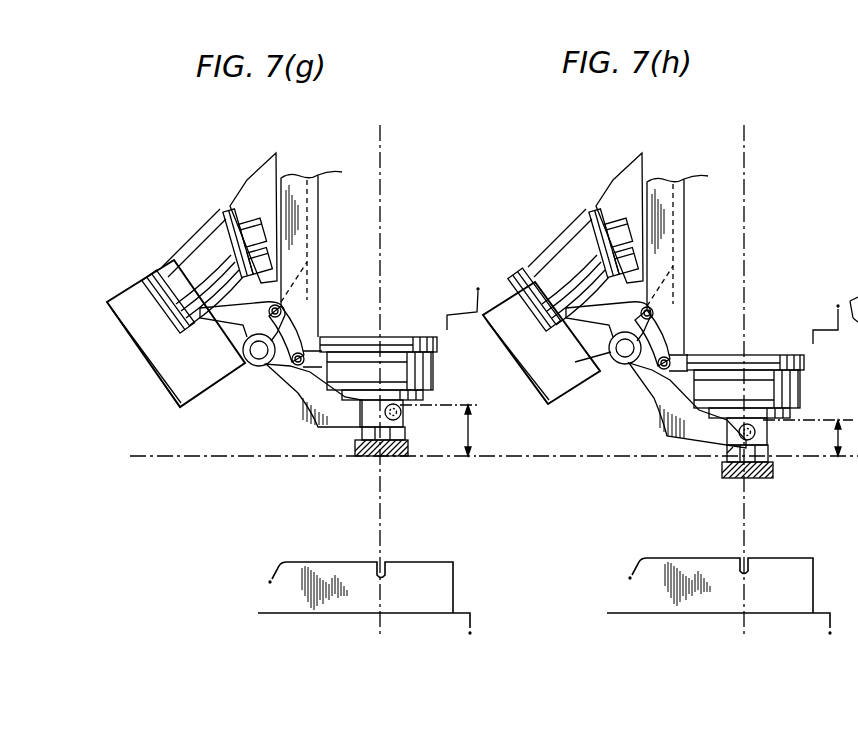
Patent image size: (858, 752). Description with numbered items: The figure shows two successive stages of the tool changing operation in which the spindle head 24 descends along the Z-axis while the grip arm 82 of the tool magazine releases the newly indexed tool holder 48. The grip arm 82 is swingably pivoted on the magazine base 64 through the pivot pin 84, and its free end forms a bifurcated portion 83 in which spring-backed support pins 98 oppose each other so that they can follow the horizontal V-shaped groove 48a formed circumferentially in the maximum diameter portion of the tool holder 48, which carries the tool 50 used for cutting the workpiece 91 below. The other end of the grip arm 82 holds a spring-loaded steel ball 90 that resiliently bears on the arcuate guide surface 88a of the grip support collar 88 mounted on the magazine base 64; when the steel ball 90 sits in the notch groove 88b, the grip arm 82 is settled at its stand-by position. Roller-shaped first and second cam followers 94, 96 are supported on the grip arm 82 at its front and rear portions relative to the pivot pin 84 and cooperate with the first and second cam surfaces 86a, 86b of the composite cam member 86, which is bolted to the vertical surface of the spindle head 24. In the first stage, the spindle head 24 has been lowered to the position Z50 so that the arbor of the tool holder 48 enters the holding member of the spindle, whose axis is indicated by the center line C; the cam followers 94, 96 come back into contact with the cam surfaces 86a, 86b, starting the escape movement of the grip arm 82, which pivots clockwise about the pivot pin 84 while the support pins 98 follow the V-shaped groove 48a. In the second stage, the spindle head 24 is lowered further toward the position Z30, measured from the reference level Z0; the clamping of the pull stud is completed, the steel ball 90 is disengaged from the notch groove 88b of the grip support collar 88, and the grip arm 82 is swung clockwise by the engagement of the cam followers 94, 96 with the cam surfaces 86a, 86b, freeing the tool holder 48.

In FIG. 7g, the spindle head 24 is at (444, 328).
In FIG. 7h, the spindle head 24 is at (813, 346).
In FIG. 7g, the tool holder 48 is at (352, 452).
In FIG. 7h, the tool holder 48 is at (724, 478).
In FIG. 7g, the V-shaped groove 48a is at (401, 412).
In FIG. 7h, the V-shaped groove 48a is at (768, 433).
In FIG. 7g, the tool 50 is at (394, 456).
In FIG. 7h, the tool 50 is at (744, 481).
In FIG. 7g, the magazine base 64 is at (183, 401).
In FIG. 7h, the magazine base 64 is at (516, 300).
In FIG. 7g, the grip arm 82 is at (300, 396).
In FIG. 7h, the grip arm 82 is at (655, 423).
In FIG. 7g, the bifurcated portion 83 is at (402, 422).
In FIG. 7h, the bifurcated portion 83 is at (740, 437).
In FIG. 7g, the pivot pin 84 is at (256, 356).
In FIG. 7h, the pivot pin 84 is at (622, 356).
In FIG. 7g, the composite cam member 86 is at (312, 228).
In FIG. 7h, the composite cam member 86 is at (684, 206).
In FIG. 7g, the first cam surface 86a is at (290, 320).
In FIG. 7h, the first cam surface 86a is at (656, 322).
In FIG. 7g, the second cam surface 86b is at (288, 340).
In FIG. 7h, the second cam surface 86b is at (672, 340).
In FIG. 7g, the grip support collar 88 is at (182, 261).
In FIG. 7h, the grip support collar 88 is at (573, 235).
In FIG. 7g, the guide surface 88a is at (190, 263).
In FIG. 7h, the guide surface 88a is at (571, 237).
In FIG. 7h, the notch groove 88b is at (582, 355).
In FIG. 7g, the steel ball 90 is at (163, 285).
In FIG. 7h, the steel ball 90 is at (562, 283).
In FIG. 7g, the workpiece 91 is at (417, 573).
In FIG. 7h, the workpiece 91 is at (777, 566).
In FIG. 7g, the first cam follower 94 is at (328, 366).
In FIG. 7h, the first cam follower 94 is at (685, 352).
In FIG. 7g, the second cam follower 96 is at (281, 306).
In FIG. 7h, the second cam follower 96 is at (652, 308).
In FIG. 7h, the support pins 98 is at (727, 453).
In FIG. 7g, the reference level Z0 is at (287, 462).
In FIG. 7g, the Z50 position Z50 is at (468, 425).
In FIG. 7h, the Z30 position Z30 is at (842, 417).
In FIG. 7g, the center line C is at (381, 394).
In FIG. 7h, the center line C is at (745, 394).